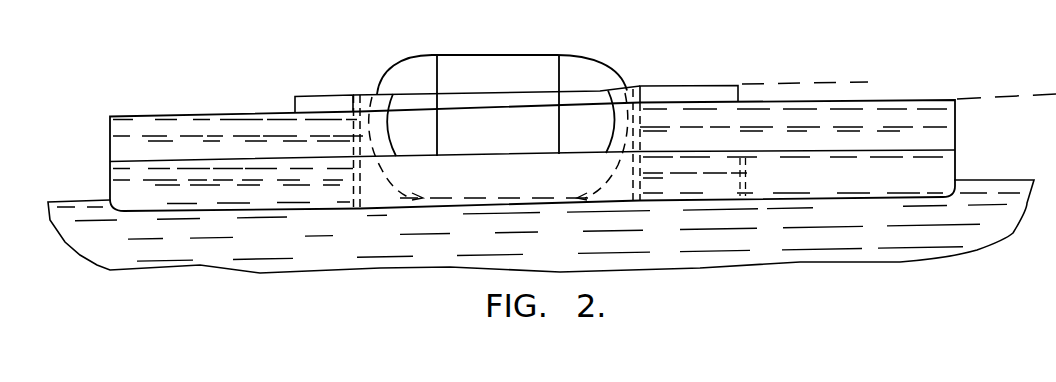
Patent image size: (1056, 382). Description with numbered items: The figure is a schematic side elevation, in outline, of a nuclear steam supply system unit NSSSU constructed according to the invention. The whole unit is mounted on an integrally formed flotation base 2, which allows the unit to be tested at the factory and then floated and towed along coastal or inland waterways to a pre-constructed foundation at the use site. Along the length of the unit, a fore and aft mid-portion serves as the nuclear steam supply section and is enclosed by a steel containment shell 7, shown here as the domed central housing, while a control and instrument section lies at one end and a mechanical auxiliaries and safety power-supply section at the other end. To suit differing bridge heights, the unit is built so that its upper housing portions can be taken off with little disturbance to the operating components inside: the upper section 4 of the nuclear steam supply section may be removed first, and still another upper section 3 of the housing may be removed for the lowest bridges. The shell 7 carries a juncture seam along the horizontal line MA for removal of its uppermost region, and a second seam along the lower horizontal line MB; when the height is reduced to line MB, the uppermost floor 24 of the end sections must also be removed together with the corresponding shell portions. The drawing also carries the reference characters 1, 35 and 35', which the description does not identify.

The containment vessel 1 is at (527, 64).
The flotation base 2 is at (140, 195).
The upper section 3 is at (340, 96).
The upper section 4 is at (428, 62).
The steel containment shell 7 is at (567, 56).
The uppermost floor 24 is at (323, 92).
The shell portion 35 is at (456, 179).
The shell portion 35' is at (586, 176).
The nuclear steam supply system unit NSSSU is at (232, 68).
The horizontal line MA is at (772, 84).
The horizontal line MB is at (1013, 97).